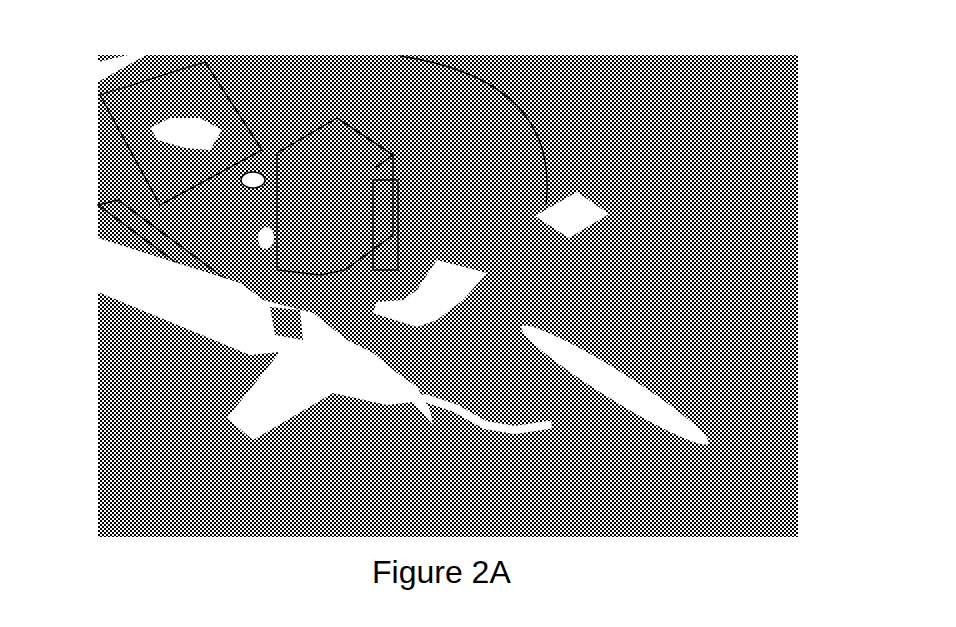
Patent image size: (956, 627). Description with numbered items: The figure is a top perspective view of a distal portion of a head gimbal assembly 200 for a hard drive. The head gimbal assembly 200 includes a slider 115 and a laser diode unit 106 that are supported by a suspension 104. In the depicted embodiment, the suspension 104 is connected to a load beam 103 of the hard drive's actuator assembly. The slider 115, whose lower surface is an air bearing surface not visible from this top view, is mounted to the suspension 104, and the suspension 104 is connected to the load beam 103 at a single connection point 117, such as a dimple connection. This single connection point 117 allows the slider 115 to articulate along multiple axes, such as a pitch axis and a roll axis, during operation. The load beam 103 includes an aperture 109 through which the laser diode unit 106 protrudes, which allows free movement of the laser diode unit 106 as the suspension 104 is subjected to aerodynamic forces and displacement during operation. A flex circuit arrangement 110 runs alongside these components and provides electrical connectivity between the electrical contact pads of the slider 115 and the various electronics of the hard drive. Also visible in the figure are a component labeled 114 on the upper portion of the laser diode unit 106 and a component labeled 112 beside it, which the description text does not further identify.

The head gimbal assembly 200 is at (566, 66).
The load beam 103 is at (112, 152).
The suspension 104 is at (363, 382).
The laser diode unit 106 is at (318, 112).
The aperture 109 is at (453, 263).
The flex circuit arrangement 110 is at (528, 145).
The post 112 is at (398, 202).
The top surface of housing 114 is at (360, 140).
The slider 115 is at (124, 223).
The single connection point 117 is at (253, 173).